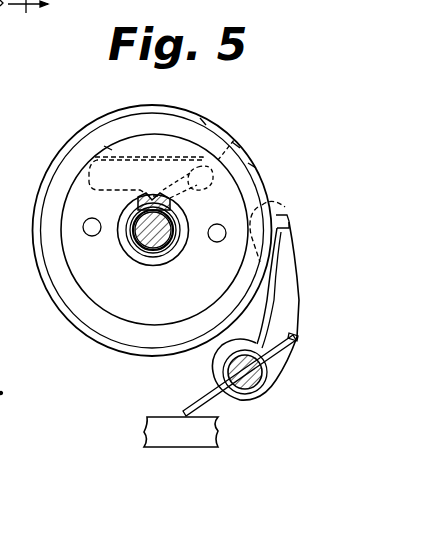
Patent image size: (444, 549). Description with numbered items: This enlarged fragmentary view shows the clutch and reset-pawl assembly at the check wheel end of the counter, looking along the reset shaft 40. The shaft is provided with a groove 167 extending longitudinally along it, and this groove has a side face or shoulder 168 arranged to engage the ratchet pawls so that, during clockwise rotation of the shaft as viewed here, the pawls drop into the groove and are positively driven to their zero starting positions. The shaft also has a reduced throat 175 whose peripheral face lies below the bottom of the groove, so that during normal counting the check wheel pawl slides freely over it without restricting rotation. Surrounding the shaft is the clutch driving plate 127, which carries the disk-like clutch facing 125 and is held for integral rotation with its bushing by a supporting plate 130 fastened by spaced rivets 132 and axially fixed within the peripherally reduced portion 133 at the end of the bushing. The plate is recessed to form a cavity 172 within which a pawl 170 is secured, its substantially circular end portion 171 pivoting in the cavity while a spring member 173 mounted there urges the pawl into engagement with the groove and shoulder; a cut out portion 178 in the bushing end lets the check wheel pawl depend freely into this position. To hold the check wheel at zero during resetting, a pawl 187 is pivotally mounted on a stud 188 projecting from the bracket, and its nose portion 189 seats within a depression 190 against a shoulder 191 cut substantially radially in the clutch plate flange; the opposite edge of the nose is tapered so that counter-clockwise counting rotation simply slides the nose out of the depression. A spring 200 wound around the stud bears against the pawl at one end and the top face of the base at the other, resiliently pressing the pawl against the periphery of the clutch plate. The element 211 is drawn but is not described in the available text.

The reset shaft 40 is at (152, 250).
The clutch facing 125 is at (88, 320).
The clutch driving plate 127 is at (250, 166).
The supporting plate 130 is at (80, 266).
The rivets 132 is at (92, 220).
The peripherally reduced portion 133 is at (152, 262).
The groove 167 is at (140, 236).
The shoulder 168 is at (146, 200).
The pawl 170 is at (206, 126).
The circular end portion 171 is at (238, 146).
The cavity 172 is at (262, 172).
The spring member 173 is at (108, 148).
The reduced throat 175 is at (170, 252).
The cut out portion 178 is at (151, 196).
The pawl 187 is at (302, 305).
The stud 188 is at (262, 375).
The nose portion 189 is at (286, 228).
The depression 190 is at (262, 206).
The shoulder 191 is at (284, 208).
The spring 200 is at (194, 408).
The support block 211 is at (212, 433).